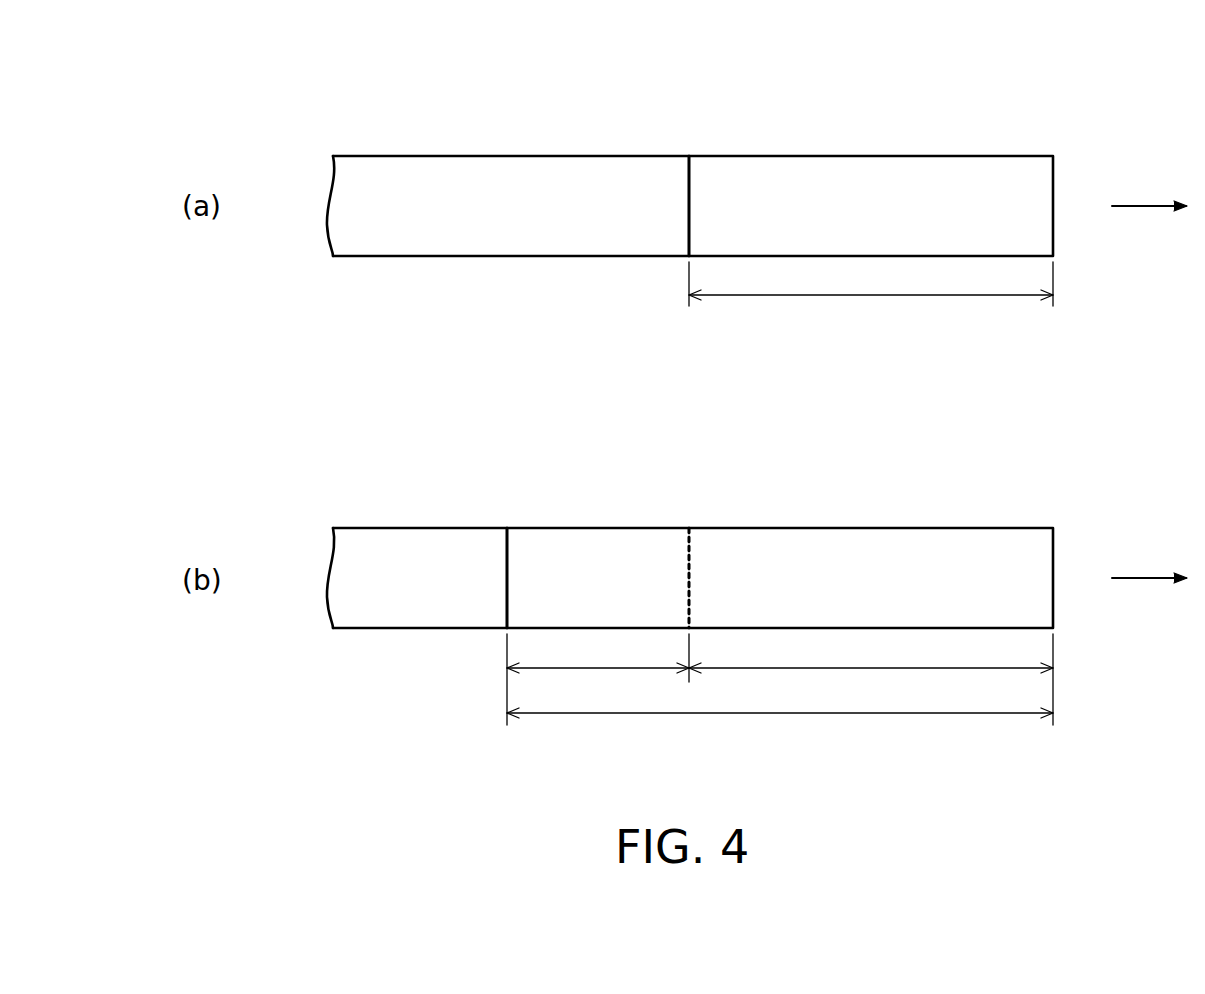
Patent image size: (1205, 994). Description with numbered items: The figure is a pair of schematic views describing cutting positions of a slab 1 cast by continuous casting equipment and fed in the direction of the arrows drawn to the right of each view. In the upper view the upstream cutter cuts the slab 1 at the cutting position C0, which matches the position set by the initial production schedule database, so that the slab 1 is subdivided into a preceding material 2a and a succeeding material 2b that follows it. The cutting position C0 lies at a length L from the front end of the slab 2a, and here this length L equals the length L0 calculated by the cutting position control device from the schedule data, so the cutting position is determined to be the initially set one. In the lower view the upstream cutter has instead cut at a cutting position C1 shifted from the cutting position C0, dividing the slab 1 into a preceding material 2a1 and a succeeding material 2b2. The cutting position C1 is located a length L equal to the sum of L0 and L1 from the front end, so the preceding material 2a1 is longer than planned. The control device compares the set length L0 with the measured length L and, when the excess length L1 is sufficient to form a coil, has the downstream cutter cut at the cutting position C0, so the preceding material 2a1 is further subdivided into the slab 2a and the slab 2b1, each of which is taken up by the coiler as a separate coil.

The slab 1 is at (928, 74).
The preceding material (slab) 2a is at (1003, 178).
The succeeding material (slab) 2b is at (478, 178).
The preceding material 2a1 is at (828, 462).
The slab 2b1 is at (643, 558).
The succeeding material 2b2 is at (410, 548).
The cutting position C0 is at (689, 154).
The cutting position C1 is at (507, 526).
The length L is at (780, 702).
The length L0 is at (871, 679).
The length L1 is at (598, 679).